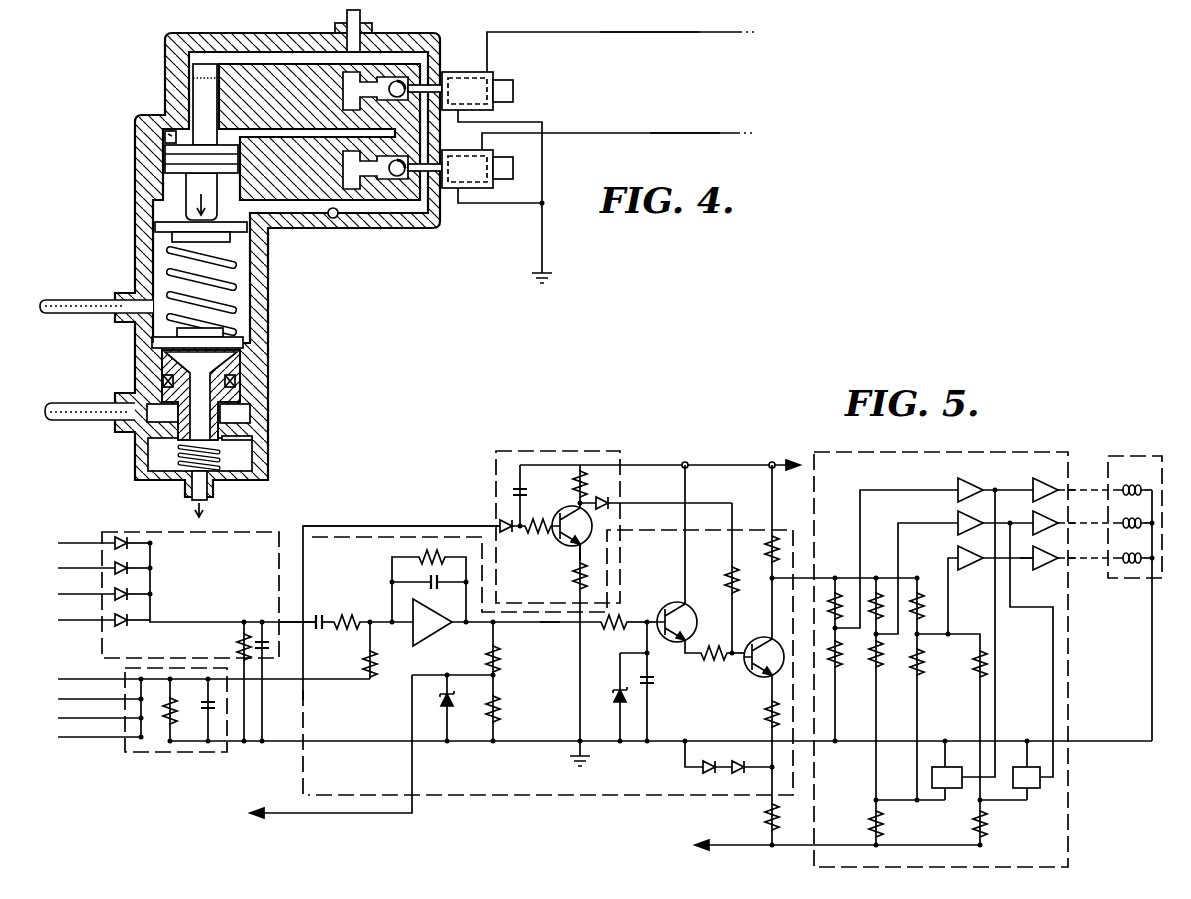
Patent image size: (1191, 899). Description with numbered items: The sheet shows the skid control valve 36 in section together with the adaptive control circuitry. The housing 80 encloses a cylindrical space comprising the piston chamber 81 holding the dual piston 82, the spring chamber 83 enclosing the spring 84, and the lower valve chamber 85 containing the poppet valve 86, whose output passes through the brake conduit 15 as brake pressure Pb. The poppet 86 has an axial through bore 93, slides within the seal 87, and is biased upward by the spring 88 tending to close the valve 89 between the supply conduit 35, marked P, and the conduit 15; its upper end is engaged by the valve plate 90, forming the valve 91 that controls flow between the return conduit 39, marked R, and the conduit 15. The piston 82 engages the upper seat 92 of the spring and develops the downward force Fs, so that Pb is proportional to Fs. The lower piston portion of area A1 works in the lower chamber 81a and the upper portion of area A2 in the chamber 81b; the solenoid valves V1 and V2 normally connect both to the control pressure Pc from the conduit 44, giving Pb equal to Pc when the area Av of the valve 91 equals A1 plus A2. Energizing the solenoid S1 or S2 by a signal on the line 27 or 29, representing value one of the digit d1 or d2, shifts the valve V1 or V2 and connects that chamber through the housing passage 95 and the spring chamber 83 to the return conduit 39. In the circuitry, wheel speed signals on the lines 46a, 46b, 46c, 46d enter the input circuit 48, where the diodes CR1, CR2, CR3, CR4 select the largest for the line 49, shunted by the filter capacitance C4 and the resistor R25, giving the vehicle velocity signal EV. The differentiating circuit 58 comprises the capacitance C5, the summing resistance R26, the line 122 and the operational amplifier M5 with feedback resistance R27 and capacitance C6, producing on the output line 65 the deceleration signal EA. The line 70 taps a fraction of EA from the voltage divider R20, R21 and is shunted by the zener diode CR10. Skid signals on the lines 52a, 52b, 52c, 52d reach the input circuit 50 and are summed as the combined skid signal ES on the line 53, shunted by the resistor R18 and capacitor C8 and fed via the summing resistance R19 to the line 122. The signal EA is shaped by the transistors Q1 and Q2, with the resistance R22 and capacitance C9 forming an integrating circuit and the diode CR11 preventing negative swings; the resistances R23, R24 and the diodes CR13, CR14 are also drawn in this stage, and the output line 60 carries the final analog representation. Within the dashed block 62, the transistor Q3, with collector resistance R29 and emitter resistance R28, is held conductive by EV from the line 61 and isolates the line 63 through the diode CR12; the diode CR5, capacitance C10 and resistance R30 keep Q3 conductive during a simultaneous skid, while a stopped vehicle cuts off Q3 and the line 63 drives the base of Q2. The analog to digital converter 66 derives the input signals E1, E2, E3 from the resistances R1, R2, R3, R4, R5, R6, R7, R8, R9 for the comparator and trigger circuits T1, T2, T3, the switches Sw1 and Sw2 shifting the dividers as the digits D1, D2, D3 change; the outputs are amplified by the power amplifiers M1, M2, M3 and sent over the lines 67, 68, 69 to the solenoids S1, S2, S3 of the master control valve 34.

In FIG. 4, the skid control valve 36 is at (155, 72).
In FIG. 4, the dual piston 82 is at (195, 98).
In FIG. 4, the effective working area of upper piston portion A2 is at (210, 52).
In FIG. 4, the upper piston chamber 81b is at (215, 58).
In FIG. 4, the control conduit 44 is at (338, 17).
In FIG. 4, the control pressure Pc is at (366, 27).
In FIG. 4, the solenoid valve V2 is at (400, 82).
In FIG. 4, the valve solenoid S2 is at (455, 72).
In FIG. 5, the valve solenoid S2 is at (1137, 515).
In FIG. 4, the digit d2 is at (620, 40).
In FIG. 4, the line 29 is at (630, 33).
In FIG. 4, the digit d1 is at (617, 132).
In FIG. 4, the line 27 is at (674, 132).
In FIG. 4, the lower piston chamber 81a is at (172, 135).
In FIG. 4, the effective working area of lower piston portion A1 is at (168, 139).
In FIG. 4, the housing 80 is at (132, 195).
In FIG. 4, the piston chamber 81 is at (170, 190).
In FIG. 4, the spring chamber 83 is at (160, 215).
In FIG. 4, the spring force Fs is at (197, 197).
In FIG. 4, the spring 84 is at (200, 272).
In FIG. 4, the return port R is at (94, 295).
In FIG. 4, the return conduit 39 is at (55, 306).
In FIG. 4, the upper seat of spring 92 is at (250, 235).
In FIG. 4, the housing passage 95 is at (334, 218).
In FIG. 4, the solenoid valve V1 is at (400, 176).
In FIG. 4, the valve solenoid S1 is at (460, 200).
In FIG. 5, the valve solenoid S1 is at (1136, 482).
In FIG. 4, the valve plate 90 is at (225, 340).
In FIG. 4, the valve area Av is at (240, 352).
In FIG. 4, the seal 87 is at (230, 378).
In FIG. 4, the poppet valve 86 is at (238, 394).
In FIG. 4, the axial through bore 93 is at (204, 413).
In FIG. 4, the valve 89 is at (240, 437).
In FIG. 4, the spring 88 is at (222, 461).
In FIG. 4, the valve 91 is at (155, 343).
In FIG. 4, the pressure port P is at (110, 401).
In FIG. 4, the supply conduit 35 is at (60, 412).
In FIG. 4, the lower valve chamber 85 is at (155, 458).
In FIG. 4, the brake conduit 15 is at (186, 490).
In FIG. 4, the output brake pressure Pb is at (213, 506).
In FIG. 5, the input circuit 48 is at (150, 528).
In FIG. 5, the line 46a is at (71, 531).
In FIG. 5, the line 46b is at (71, 557).
In FIG. 5, the line 46c is at (71, 583).
In FIG. 5, the line 46d is at (71, 609).
In FIG. 5, the diode CR1 is at (132, 545).
In FIG. 5, the diode CR2 is at (132, 570).
In FIG. 5, the diode CR3 is at (132, 596).
In FIG. 5, the diode CR4 is at (132, 621).
In FIG. 5, the resistor R25 is at (227, 682).
In FIG. 5, the shunt filter capacitance C4 is at (268, 652).
In FIG. 5, the vehicle velocity signal EV is at (291, 615).
In FIG. 5, the line 49 is at (285, 624).
In FIG. 5, the line 53 is at (302, 682).
In FIG. 5, the input circuit 50 is at (128, 752).
In FIG. 5, the line 52a is at (84, 669).
In FIG. 5, the line 52b is at (83, 689).
In FIG. 5, the line 52c is at (83, 708).
In FIG. 5, the line 52d is at (83, 728).
In FIG. 5, the resistor R18 is at (183, 710).
In FIG. 5, the capacitor C8 is at (200, 710).
In FIG. 5, the line 61 is at (308, 525).
In FIG. 5, the differentiating circuit 58 is at (343, 535).
In FIG. 5, the threshold detector 62 is at (496, 460).
In FIG. 5, the analog to digital converter 66 is at (1066, 835).
In FIG. 5, the master control valve 34 is at (1135, 455).
In FIG. 5, the capacitance C5 is at (321, 613).
In FIG. 5, the summing resistance R26 is at (373, 613).
In FIG. 5, the line 122 is at (375, 627).
In FIG. 5, the summing resistance R19 is at (388, 650).
In FIG. 5, the combined skid signal ES is at (255, 674).
In FIG. 5, the feedback resistance R27 is at (415, 557).
In FIG. 5, the feedback capacitance C6 is at (429, 577).
In FIG. 5, the operational amplifier M5 is at (421, 622).
In FIG. 5, the vehicle deceleration signal EA is at (526, 632).
In FIG. 5, the output line 65 is at (545, 625).
In FIG. 5, the voltage divider resistance R20 is at (508, 650).
In FIG. 5, the voltage divider resistance R21 is at (508, 709).
In FIG. 5, the zener diode CR10 is at (452, 708).
In FIG. 5, the line 70 is at (350, 813).
In FIG. 5, the diode CR5 is at (413, 519).
In FIG. 5, the capacitance C10 is at (512, 497).
In FIG. 5, the resistance R30 is at (535, 536).
In FIG. 5, the transistor Q3 is at (563, 528).
In FIG. 5, the collector resistance R29 is at (564, 485).
In FIG. 5, the emitter resistance R28 is at (563, 655).
In FIG. 5, the diode CR12 is at (610, 497).
In FIG. 5, the line 63 is at (658, 504).
In FIG. 5, the resistance R22 is at (628, 615).
In FIG. 5, the transistor Q1 is at (677, 559).
In FIG. 5, the resistor R23 is at (721, 662).
In FIG. 5, the resistor R24 is at (718, 578).
In FIG. 5, the transistor Q2 is at (758, 656).
In FIG. 5, the output line 60 is at (808, 578).
In FIG. 5, the capacitance C9 is at (654, 683).
In FIG. 5, the diode CR11 is at (613, 700).
In FIG. 5, the diode CR13 is at (701, 764).
In FIG. 5, the diode CR14 is at (743, 774).
In FIG. 5, the resistance R1 is at (844, 603).
In FIG. 5, the resistance R2 is at (844, 686).
In FIG. 5, the resistance R3 is at (885, 606).
In FIG. 5, the resistance R4 is at (885, 718).
In FIG. 5, the resistance R5 is at (861, 824).
In FIG. 5, the resistance R6 is at (926, 606).
In FIG. 5, the resistance R7 is at (928, 718).
In FIG. 5, the resistance R8 is at (952, 717).
In FIG. 5, the resistance R9 is at (990, 824).
In FIG. 5, the input signal E1 is at (896, 550).
In FIG. 5, the input signal E2 is at (917, 571).
In FIG. 5, the input signal E3 is at (941, 589).
In FIG. 5, the comparator and trigger circuit T1 is at (995, 482).
In FIG. 5, the comparator and trigger circuit T2 is at (995, 516).
In FIG. 5, the comparator and trigger circuit T3 is at (995, 551).
In FIG. 5, the node D1 is at (996, 488).
In FIG. 5, the binary digit D2 is at (1010, 521).
In FIG. 5, the third binary digit D3 is at (1023, 558).
In FIG. 5, the power amplifier M1 is at (1076, 482).
In FIG. 5, the power amplifier M2 is at (1076, 516).
In FIG. 5, the power amplifier M3 is at (1076, 551).
In FIG. 5, the valve actuating solenoid S3 is at (1137, 550).
In FIG. 5, the line 67 is at (1080, 490).
In FIG. 5, the line 68 is at (1085, 523).
In FIG. 5, the line 69 is at (1080, 560).
In FIG. 5, the switch Sw1 is at (919, 770).
In FIG. 5, the switch Sw2 is at (1010, 770).